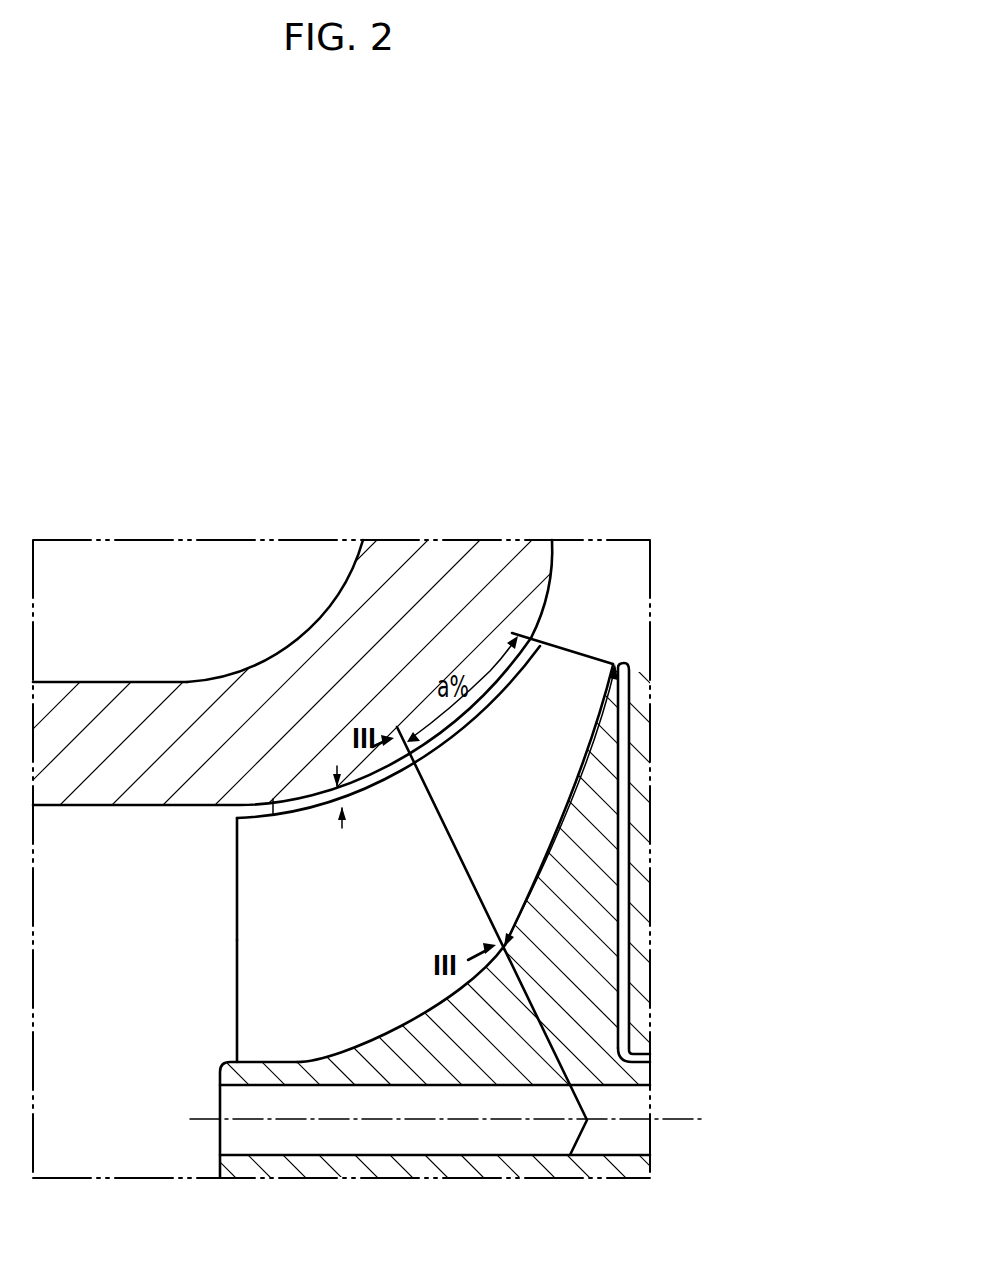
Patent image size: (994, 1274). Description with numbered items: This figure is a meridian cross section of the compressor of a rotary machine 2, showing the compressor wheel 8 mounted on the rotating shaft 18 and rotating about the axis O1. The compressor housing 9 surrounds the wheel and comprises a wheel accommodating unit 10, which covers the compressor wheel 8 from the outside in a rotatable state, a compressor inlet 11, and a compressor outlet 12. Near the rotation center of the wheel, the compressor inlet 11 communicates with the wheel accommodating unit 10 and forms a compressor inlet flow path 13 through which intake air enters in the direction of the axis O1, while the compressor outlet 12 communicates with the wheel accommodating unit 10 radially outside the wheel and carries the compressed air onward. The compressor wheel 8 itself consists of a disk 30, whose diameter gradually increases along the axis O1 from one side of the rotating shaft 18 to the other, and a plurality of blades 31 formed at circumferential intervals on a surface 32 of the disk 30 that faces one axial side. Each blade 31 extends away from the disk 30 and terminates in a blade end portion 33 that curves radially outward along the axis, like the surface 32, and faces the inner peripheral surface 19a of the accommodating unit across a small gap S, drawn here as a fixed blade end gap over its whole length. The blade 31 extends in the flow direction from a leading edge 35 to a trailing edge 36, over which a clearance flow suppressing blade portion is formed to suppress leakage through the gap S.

The centrifugal compressor 2 is at (437, 519).
The compressor wheel 8 is at (620, 770).
The compressor housing 9 is at (345, 583).
The wheel accommodating unit 10 is at (392, 773).
The compressor inlet 11 is at (72, 682).
The compressor outlet 12 is at (595, 575).
The compressor inlet flow path 13 is at (85, 867).
The rotating shaft 18 is at (463, 1140).
The inner peripheral surface 19a is at (307, 812).
The disk 30 is at (598, 912).
The blades 31 is at (237, 926).
The surface 32 is at (355, 1046).
The blade end portion 33 is at (273, 800).
The leading edge 35 is at (237, 985).
The trailing edge 36 is at (600, 655).
The gap S is at (345, 802).
The axis O1 is at (682, 1117).